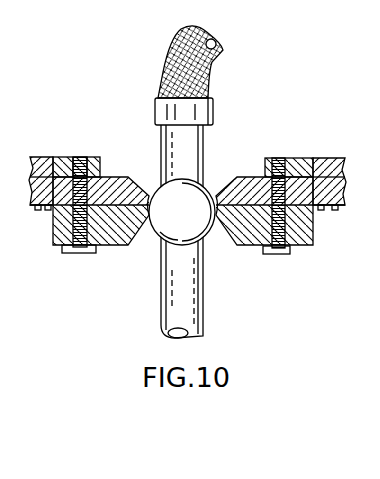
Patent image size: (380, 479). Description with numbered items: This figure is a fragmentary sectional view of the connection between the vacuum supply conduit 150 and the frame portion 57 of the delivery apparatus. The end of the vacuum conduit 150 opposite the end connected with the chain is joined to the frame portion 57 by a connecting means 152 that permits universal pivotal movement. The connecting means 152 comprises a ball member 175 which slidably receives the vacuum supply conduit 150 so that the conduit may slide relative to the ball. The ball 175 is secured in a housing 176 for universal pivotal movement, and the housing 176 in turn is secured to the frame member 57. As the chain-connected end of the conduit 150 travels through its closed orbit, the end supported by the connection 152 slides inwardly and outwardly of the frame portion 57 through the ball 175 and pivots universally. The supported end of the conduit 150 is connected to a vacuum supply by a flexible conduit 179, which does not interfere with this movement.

The frame portion 57 is at (316, 159).
The vacuum supply conduit 150 is at (189, 291).
The connecting means 152 is at (215, 161).
The ball member 175 is at (172, 222).
The housing 176 is at (233, 238).
The flexible conduit 179 is at (215, 50).